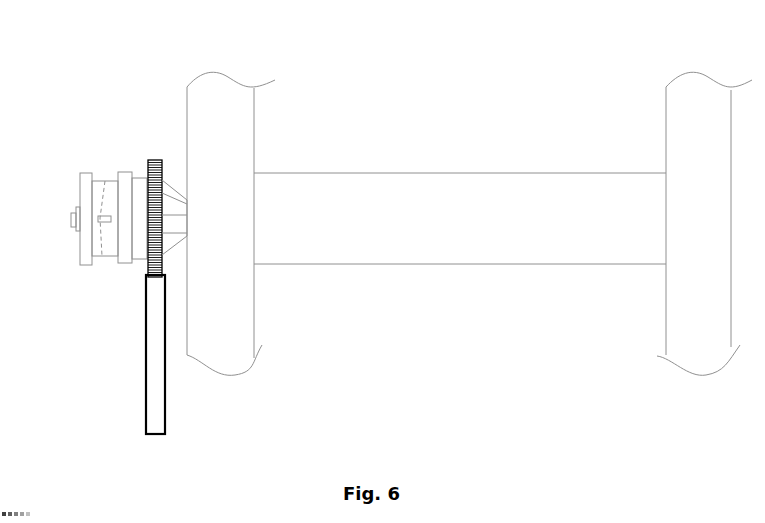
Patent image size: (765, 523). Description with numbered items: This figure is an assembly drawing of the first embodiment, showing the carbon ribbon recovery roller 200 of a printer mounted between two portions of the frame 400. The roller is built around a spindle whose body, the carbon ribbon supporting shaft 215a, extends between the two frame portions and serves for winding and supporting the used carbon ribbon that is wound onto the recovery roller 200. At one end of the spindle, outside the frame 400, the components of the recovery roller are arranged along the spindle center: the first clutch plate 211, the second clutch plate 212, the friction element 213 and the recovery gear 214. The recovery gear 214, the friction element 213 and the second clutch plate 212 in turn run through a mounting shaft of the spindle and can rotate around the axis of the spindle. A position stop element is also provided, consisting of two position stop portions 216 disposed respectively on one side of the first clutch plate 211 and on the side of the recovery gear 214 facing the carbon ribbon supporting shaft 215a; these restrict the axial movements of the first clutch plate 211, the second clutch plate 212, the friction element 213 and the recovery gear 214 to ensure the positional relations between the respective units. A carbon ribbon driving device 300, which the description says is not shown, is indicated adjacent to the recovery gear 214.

The transmission device 200 is at (368, 118).
The shaft 215a is at (437, 213).
The support wall 400 is at (247, 275).
The disk 211 is at (92, 188).
The intermediate body 212 is at (122, 250).
The plate 213 is at (136, 177).
The gear 214 is at (156, 226).
The hub / connecting portion 216 is at (183, 200).
The rack 300 is at (155, 374).